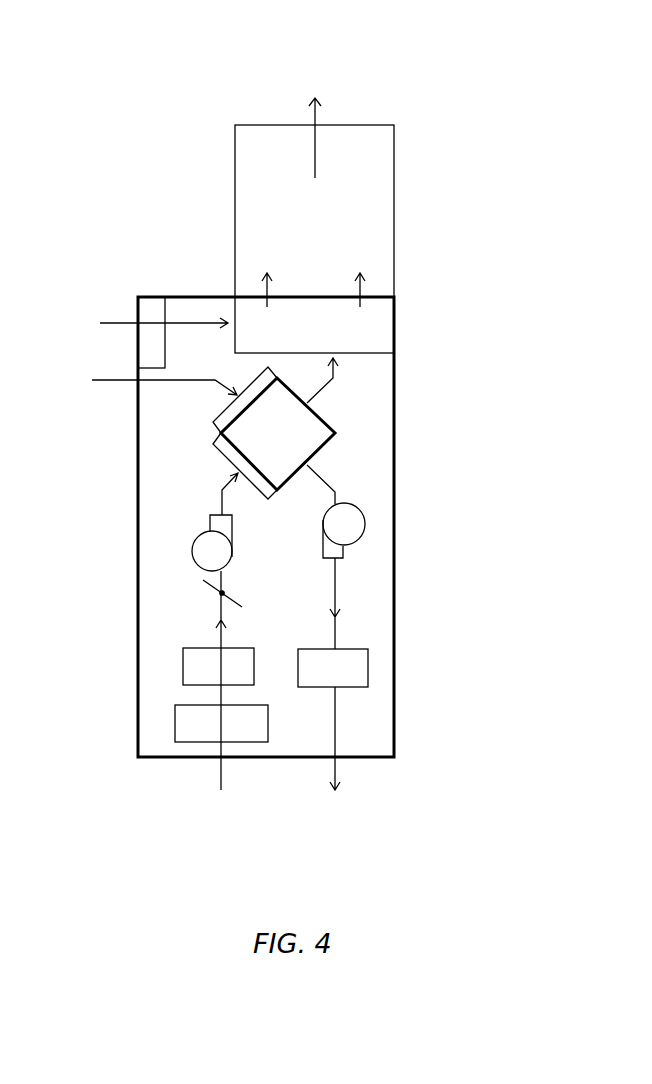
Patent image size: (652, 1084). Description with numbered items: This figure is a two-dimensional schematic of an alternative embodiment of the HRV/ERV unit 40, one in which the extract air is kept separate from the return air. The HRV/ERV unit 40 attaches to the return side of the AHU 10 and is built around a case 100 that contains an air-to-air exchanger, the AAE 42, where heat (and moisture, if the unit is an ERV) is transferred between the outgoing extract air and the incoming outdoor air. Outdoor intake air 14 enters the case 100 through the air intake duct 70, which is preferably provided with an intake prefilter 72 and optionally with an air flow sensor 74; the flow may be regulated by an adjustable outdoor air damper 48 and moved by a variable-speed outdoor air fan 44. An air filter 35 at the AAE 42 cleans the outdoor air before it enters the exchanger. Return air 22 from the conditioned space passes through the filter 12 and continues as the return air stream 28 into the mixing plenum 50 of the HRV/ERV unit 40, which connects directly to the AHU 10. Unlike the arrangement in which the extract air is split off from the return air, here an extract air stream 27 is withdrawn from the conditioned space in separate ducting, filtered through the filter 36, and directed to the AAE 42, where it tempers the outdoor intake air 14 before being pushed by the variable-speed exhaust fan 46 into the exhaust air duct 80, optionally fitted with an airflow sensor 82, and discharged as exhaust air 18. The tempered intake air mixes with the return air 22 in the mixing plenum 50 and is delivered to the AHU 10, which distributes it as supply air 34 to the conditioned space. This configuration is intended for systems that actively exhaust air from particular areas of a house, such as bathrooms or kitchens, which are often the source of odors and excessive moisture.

The AHU 10 is at (380, 222).
The filter 12 is at (147, 300).
The outdoor intake air 14 is at (215, 773).
The exhaust air 18 is at (338, 768).
The return air 22 is at (110, 327).
The extract air stream 27 is at (205, 380).
The return air stream 28 is at (191, 318).
The supply air 34 is at (318, 121).
The air filter 35 is at (217, 448).
The filter 36 is at (217, 427).
The HRV/ERV unit 40 is at (462, 484).
The AAE 42 is at (322, 435).
The variable-speed outdoor air fan 44 is at (199, 550).
The variable-speed exhaust fan 46 is at (347, 522).
The adjustable outdoor air damper 48 is at (215, 596).
The mixing plenum 50 is at (382, 332).
The air intake duct 70 is at (212, 587).
The intake prefilter 72 is at (193, 727).
The air flow sensor 74 is at (183, 667).
The exhaust air duct 80 is at (335, 580).
The airflow sensor 82 is at (360, 678).
The case 100 is at (393, 640).